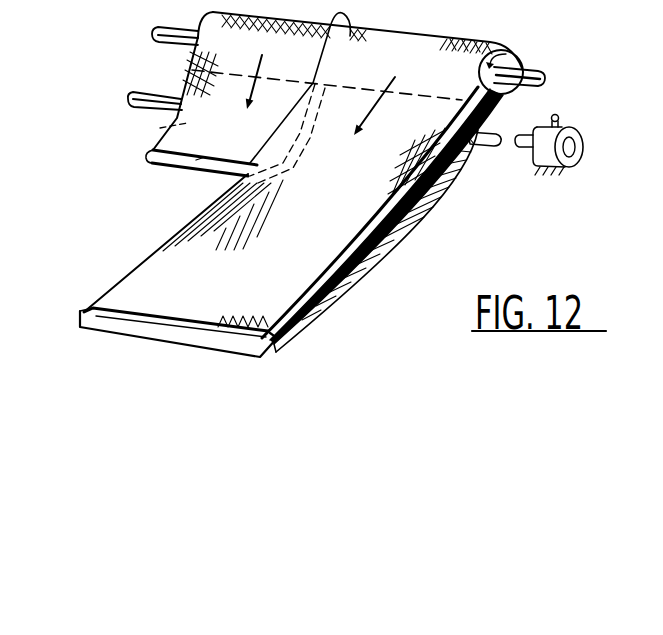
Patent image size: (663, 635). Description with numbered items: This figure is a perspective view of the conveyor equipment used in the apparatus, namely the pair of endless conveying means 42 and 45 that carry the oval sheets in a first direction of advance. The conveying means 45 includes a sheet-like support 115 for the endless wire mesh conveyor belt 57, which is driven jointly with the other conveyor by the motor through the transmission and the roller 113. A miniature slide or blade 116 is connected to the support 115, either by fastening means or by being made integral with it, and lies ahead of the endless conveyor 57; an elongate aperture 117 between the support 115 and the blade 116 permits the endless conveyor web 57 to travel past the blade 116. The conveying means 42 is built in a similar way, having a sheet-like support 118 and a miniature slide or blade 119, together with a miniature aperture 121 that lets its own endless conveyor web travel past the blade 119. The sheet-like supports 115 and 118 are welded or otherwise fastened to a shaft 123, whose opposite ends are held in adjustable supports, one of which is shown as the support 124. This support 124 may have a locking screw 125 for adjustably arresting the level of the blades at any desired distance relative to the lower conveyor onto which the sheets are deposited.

The endless wire mesh conveyor belt 57 is at (433, 40).
The endless conveying means 42 is at (188, 60).
The sheet-like support 118 is at (158, 128).
The miniature slide or blade 119 is at (158, 160).
The miniature aperture 121 is at (196, 160).
The roller 113 is at (506, 54).
The endless conveying means 45 is at (409, 228).
The sheet-like support 115 is at (360, 265).
The elongate aperture 117 is at (143, 322).
The miniature slide or blade 116 is at (212, 342).
The adjustable support 124 is at (583, 133).
The shaft 123 is at (521, 135).
The locking screw 125 is at (558, 116).